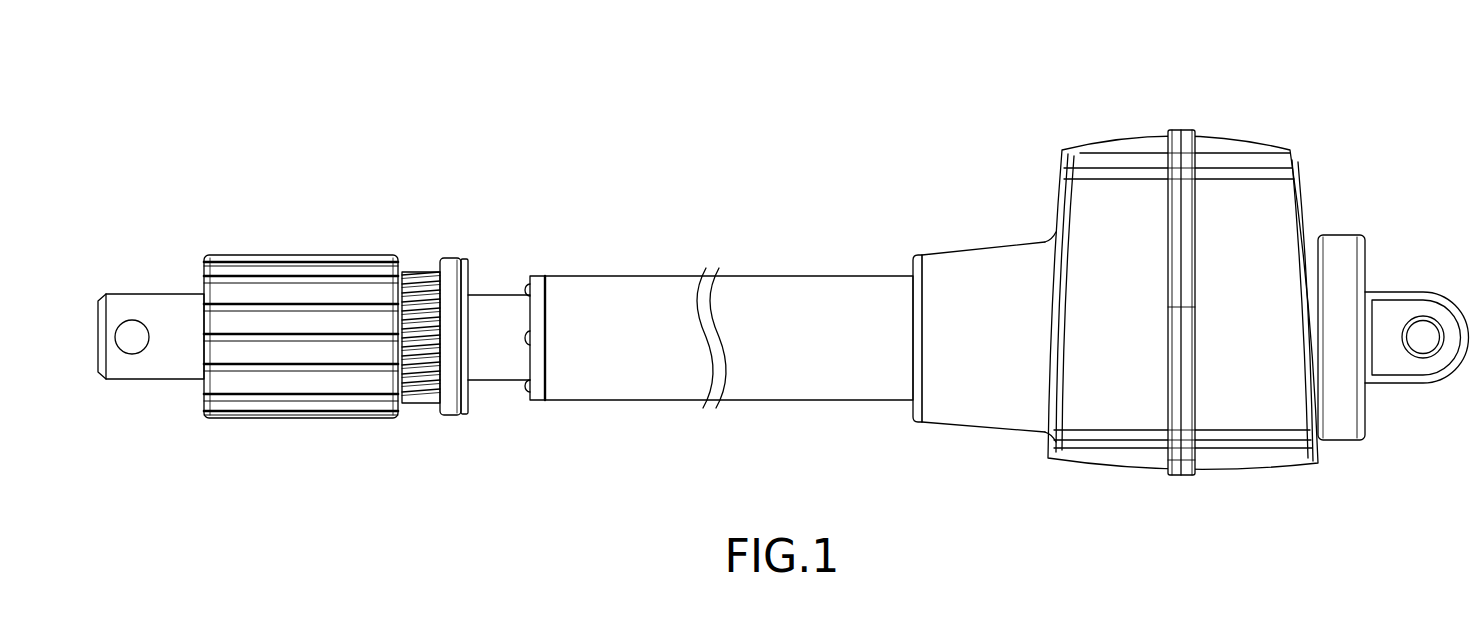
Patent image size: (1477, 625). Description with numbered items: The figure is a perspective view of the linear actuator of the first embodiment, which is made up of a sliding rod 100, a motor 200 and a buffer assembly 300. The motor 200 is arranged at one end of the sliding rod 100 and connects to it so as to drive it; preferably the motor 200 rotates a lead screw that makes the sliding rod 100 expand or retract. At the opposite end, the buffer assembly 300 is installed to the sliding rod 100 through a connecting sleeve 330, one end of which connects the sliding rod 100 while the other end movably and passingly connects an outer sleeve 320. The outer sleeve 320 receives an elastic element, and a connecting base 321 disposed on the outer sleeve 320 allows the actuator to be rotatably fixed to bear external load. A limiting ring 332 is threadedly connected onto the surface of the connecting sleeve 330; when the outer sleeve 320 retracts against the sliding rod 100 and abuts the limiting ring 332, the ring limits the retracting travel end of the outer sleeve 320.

The sliding rod 100 is at (764, 258).
The motor 200 is at (1218, 122).
The buffer assembly 300 is at (321, 240).
The outer sleeve 320 is at (272, 288).
The connecting base 321 is at (152, 303).
The connecting sleeve 330 is at (422, 270).
The limiting ring 332 is at (453, 258).